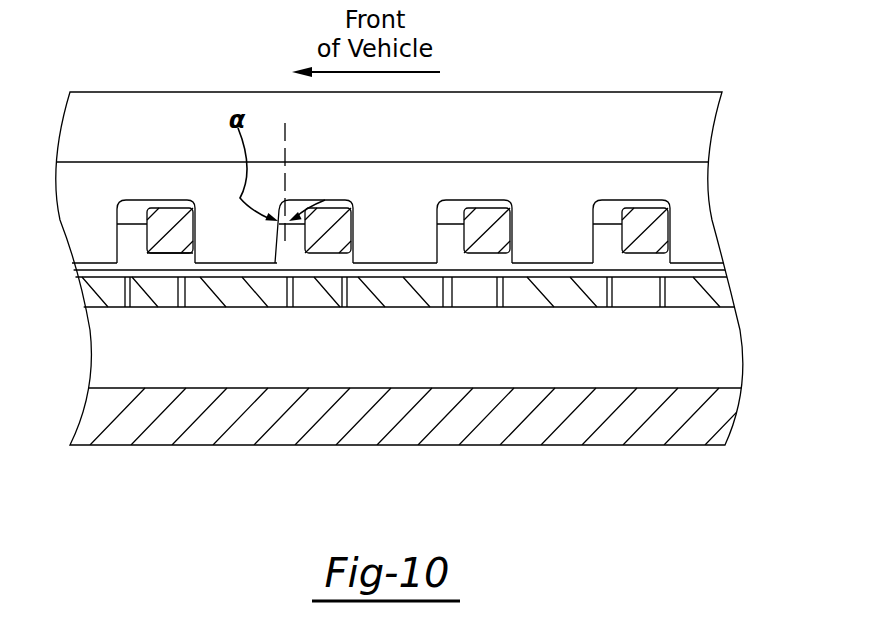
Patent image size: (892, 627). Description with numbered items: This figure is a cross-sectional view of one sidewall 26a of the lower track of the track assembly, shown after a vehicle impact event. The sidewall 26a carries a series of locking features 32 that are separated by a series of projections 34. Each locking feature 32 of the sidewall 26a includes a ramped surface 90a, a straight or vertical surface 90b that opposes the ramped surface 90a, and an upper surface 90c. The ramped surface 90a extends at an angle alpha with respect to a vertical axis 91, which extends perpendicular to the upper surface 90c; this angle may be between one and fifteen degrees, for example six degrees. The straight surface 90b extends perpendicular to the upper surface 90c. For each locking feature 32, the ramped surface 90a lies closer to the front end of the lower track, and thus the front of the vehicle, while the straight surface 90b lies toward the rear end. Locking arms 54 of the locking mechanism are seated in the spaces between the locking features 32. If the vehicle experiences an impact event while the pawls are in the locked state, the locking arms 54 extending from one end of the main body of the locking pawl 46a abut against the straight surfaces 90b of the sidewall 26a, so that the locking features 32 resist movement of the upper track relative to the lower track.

The sidewall 26a is at (705, 243).
The locking feature 32 is at (455, 258).
The projection 34 is at (390, 237).
The locking pawl 46a is at (161, 262).
The locking arm 54 is at (168, 218).
The ramped surface 90a is at (440, 210).
The straight surface 90b is at (515, 228).
The upper surface 90c is at (492, 203).
The vertical axis 91 is at (285, 135).